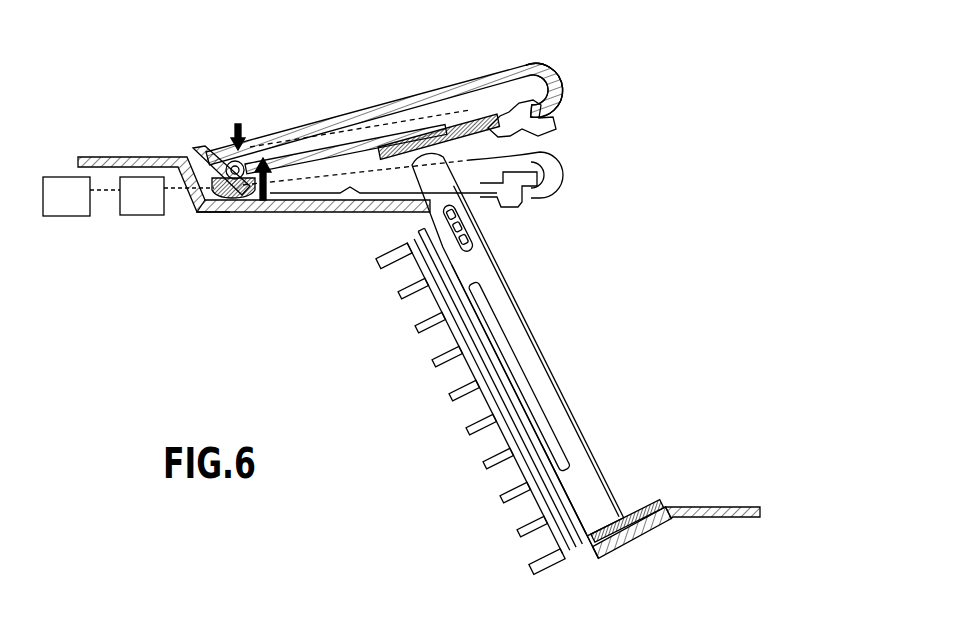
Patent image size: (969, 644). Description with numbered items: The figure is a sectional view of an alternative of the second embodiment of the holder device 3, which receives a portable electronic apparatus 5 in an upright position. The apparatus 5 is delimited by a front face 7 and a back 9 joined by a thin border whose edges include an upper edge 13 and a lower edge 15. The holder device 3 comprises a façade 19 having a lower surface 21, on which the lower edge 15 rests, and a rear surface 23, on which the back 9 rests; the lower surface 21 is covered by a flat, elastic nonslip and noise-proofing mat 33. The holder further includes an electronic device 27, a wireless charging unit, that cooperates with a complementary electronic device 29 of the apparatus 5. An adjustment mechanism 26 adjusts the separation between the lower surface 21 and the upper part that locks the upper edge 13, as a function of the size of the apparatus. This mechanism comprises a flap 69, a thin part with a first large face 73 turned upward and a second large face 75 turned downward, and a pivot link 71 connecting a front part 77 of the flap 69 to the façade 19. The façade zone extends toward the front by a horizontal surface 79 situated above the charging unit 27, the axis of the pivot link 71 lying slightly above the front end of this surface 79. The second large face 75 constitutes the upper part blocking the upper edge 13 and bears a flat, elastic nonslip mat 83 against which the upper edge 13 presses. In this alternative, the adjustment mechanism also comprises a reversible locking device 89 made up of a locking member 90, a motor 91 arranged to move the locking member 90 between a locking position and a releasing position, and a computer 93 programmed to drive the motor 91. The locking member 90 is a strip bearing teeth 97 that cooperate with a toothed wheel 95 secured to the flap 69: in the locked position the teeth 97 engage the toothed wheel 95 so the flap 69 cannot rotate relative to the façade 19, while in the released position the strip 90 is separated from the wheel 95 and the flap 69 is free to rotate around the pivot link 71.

The holder device 3 is at (722, 437).
The electronic apparatus 5 is at (552, 330).
The front face 7 is at (563, 390).
The back 9 is at (536, 508).
The upper edge 13 is at (520, 156).
The lower edge 15 is at (614, 528).
The façade 19 is at (757, 489).
The lower surface 21 is at (634, 552).
The rear surface 23 is at (476, 374).
The adjustment mechanism 26 is at (582, 92).
The electronic device 27 is at (509, 446).
The complementary electronic device 29 is at (566, 424).
The nonslip mat 33 is at (634, 519).
The flap 69 is at (392, 115).
The pivot link 71 is at (238, 124).
The first large face 73 is at (522, 70).
The second large face 75 is at (428, 130).
The front part 77 is at (195, 150).
The horizontal surface 79 is at (318, 197).
The nonslip mat 83 is at (478, 143).
The locking device 89 is at (216, 213).
The locking member 90 is at (264, 200).
The motor 91 is at (141, 217).
The computer 93 is at (66, 218).
The toothed wheel 95 is at (230, 163).
The teeth 97 is at (237, 199).